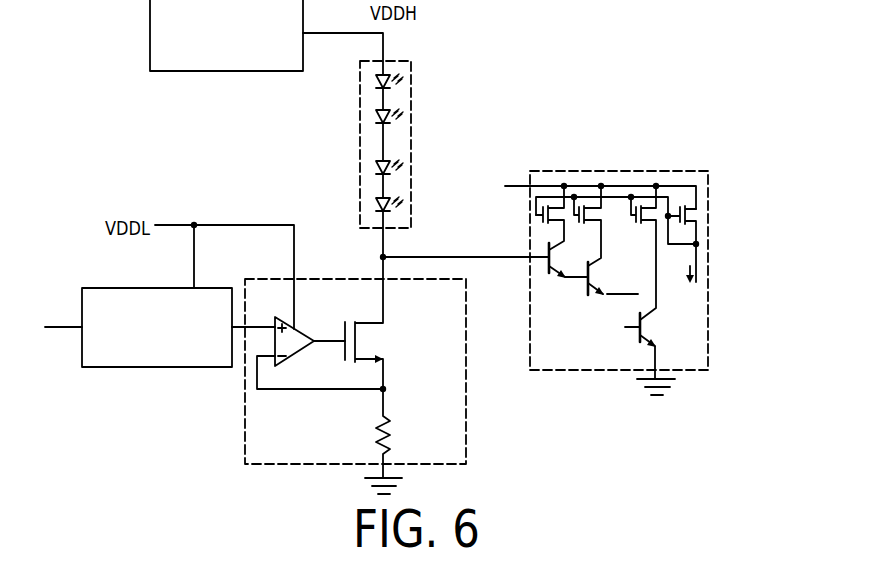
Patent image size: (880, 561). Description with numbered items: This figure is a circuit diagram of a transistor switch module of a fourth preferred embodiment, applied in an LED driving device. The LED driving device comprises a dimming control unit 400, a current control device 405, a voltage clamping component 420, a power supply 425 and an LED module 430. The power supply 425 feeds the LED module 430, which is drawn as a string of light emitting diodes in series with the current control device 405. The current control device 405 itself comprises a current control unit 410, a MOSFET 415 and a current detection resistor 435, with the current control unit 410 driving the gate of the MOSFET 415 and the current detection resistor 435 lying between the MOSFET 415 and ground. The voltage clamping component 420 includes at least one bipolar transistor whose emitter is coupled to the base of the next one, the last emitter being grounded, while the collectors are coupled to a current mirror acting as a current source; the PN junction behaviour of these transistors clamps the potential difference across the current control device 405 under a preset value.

The dimming control unit 400 is at (152, 368).
The current control device 405 is at (466, 318).
The current control unit 410 is at (295, 323).
The MOSFET 415 is at (397, 344).
The voltage clamping component 420 is at (708, 246).
The power supply 425 is at (150, 32).
The LED module 430 is at (360, 124).
The current detection resistor 435 is at (390, 427).